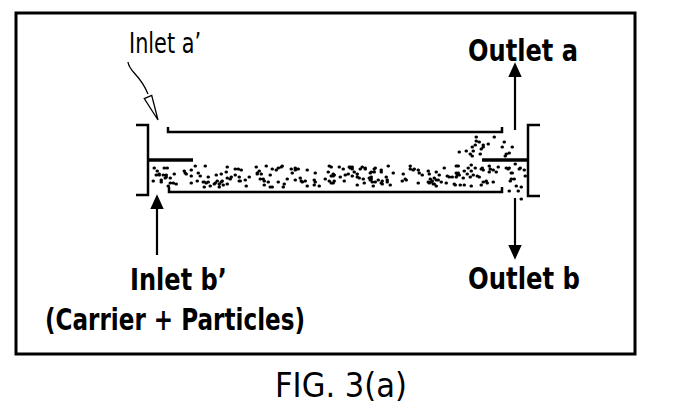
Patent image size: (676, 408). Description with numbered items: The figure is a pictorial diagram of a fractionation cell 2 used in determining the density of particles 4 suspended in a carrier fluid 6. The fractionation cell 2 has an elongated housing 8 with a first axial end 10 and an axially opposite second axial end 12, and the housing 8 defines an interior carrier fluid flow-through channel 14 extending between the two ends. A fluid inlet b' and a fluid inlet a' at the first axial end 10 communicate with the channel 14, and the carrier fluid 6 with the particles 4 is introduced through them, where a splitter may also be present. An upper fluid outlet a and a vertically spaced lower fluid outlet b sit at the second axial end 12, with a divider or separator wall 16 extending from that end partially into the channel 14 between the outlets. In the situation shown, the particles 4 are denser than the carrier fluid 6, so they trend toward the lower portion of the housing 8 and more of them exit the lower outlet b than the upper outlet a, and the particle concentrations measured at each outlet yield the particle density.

The fractionation cell 2 is at (335, 132).
The particles 4 is at (285, 193).
The carrier fluid 6 is at (352, 163).
The elongated housing 8 is at (209, 131).
The first axial end 10 is at (138, 151).
The second axial end 12 is at (533, 180).
The carrier fluid flow-through channel 14 is at (388, 132).
The divider or separator wall 16 is at (531, 149).